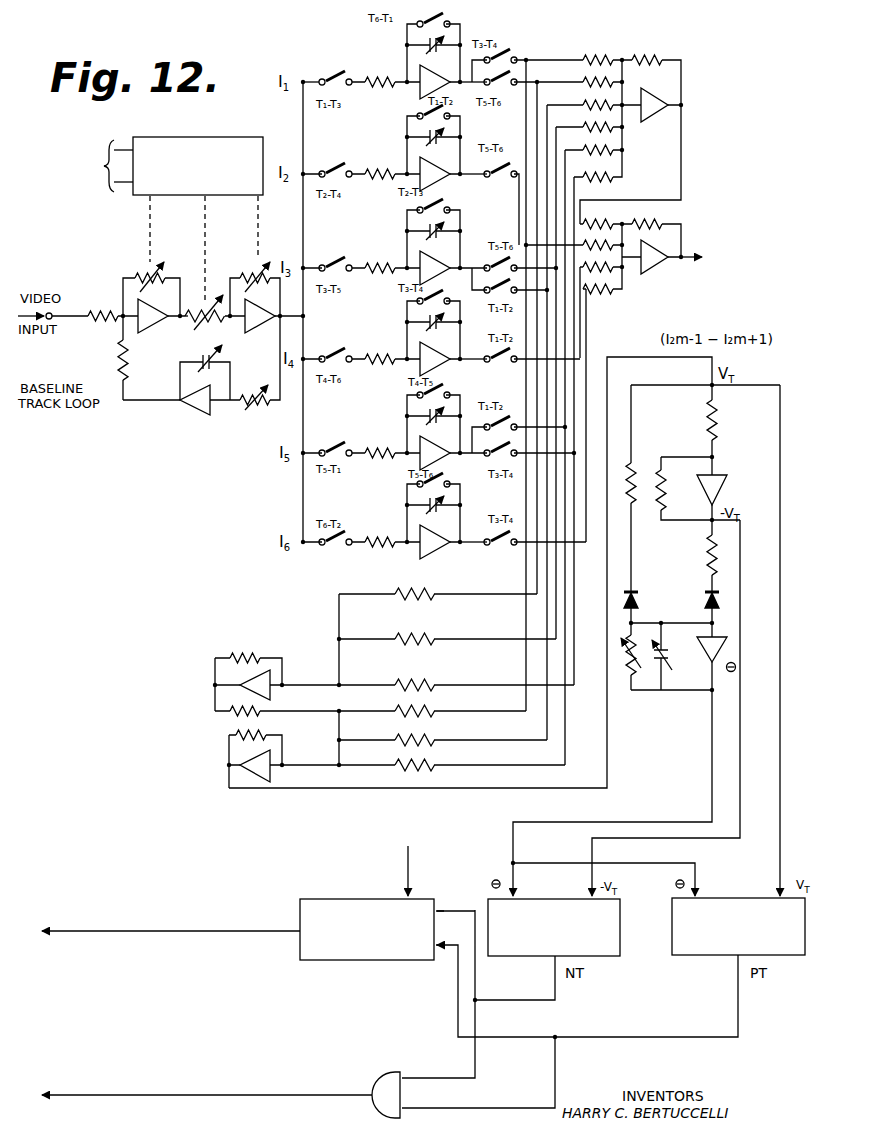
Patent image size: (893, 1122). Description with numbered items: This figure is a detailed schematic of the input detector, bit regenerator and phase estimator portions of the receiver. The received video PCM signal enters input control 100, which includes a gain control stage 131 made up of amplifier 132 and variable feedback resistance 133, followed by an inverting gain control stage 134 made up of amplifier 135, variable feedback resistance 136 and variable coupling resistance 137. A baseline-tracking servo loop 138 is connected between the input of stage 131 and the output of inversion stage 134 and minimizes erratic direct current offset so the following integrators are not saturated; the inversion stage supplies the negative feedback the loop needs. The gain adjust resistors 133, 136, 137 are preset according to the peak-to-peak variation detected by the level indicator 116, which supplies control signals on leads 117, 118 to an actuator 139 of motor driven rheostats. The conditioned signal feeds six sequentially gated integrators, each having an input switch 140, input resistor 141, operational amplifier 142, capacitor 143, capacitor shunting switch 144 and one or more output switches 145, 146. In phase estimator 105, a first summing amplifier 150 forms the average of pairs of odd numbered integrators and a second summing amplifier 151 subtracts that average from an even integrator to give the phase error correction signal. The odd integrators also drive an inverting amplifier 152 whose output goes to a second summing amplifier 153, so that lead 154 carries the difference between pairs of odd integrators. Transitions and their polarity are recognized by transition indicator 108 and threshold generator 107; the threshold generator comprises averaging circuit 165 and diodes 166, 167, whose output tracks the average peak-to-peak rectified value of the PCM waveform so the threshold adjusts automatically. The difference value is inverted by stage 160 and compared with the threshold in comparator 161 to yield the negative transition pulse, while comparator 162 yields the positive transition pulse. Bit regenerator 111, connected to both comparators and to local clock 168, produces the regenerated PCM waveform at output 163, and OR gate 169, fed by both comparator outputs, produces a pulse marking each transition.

The input control 100 is at (195, 283).
The phase estimator 105 is at (619, 54).
The threshold generator 107 is at (704, 700).
The transition indicator 108 is at (708, 448).
The bit regenerator 111 is at (376, 892).
The level indicator 116 is at (66, 162).
The lead 117 is at (123, 148).
The lead 118 is at (120, 184).
The gain control stage 131 is at (125, 294).
The amplifier 132 is at (141, 358).
The variable feedback resistance 133 is at (152, 271).
The inverting gain control stage 134 is at (283, 240).
The amplifier 135 is at (228, 362).
The variable feedback resistance 136 is at (258, 269).
The variable coupling resistance 137 is at (226, 320).
The baseline-tracking servo loop 138 is at (196, 412).
The actuator 139 is at (246, 137).
The input switch 140 is at (320, 78).
The input resistor 141 is at (370, 95).
The operational amplifier 142 is at (421, 87).
The capacitor 143 is at (406, 46).
The capacitor shunting switch 144 is at (448, 27).
The output switch 145 is at (508, 59).
The output switch 146 is at (518, 80).
The first summing amplifier 150 is at (672, 85).
The second summing amplifier 151 is at (658, 272).
The inverting amplifier 152 is at (275, 680).
The second summing amplifier 153 is at (275, 763).
The lead 154 is at (652, 358).
The inverting stage 160 is at (727, 490).
The comparator 161 is at (569, 894).
The comparator 162 is at (750, 891).
The output 163 is at (248, 942).
The averaging circuit 165 is at (668, 663).
The diode 166 is at (704, 606).
The diode 167 is at (635, 592).
The local clock 168 is at (411, 860).
The OR gate 169 is at (376, 1076).